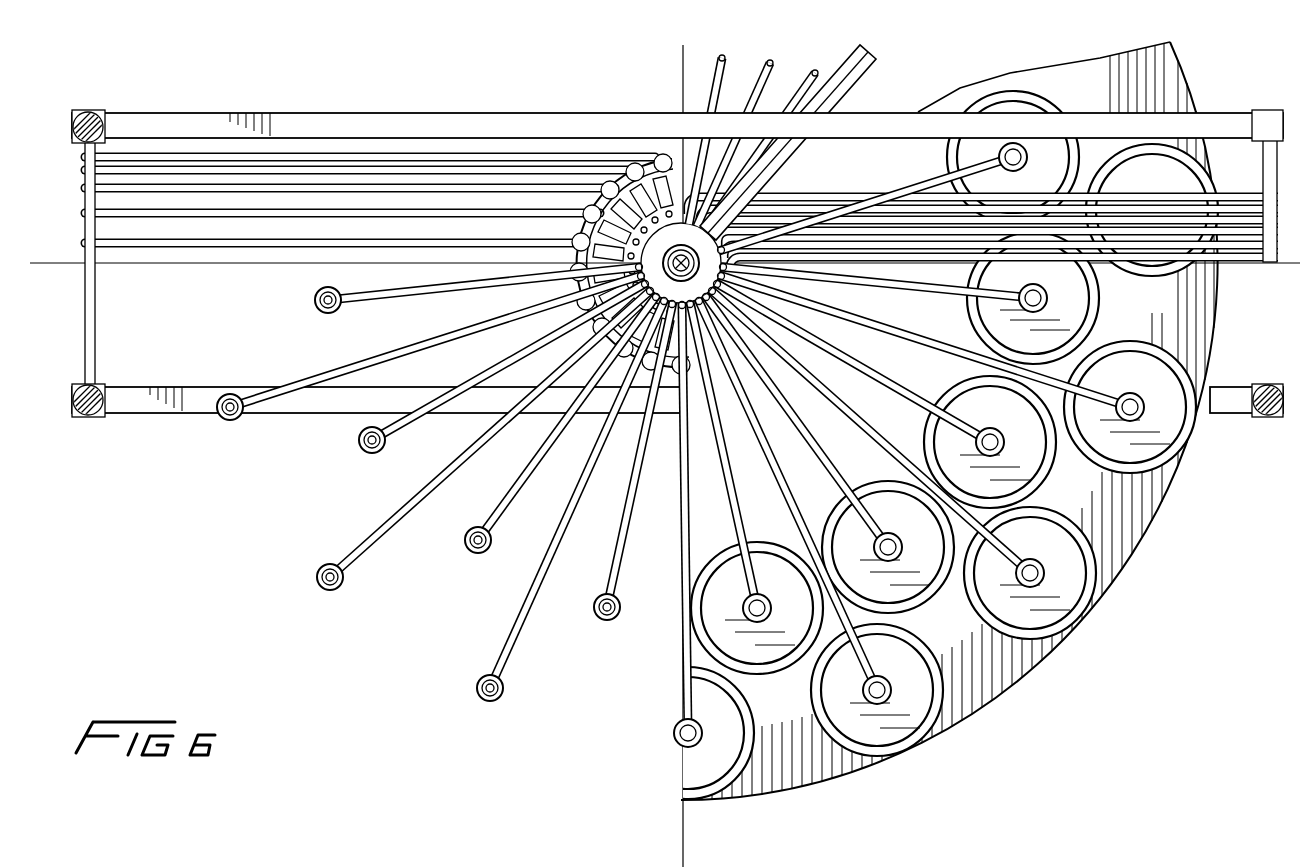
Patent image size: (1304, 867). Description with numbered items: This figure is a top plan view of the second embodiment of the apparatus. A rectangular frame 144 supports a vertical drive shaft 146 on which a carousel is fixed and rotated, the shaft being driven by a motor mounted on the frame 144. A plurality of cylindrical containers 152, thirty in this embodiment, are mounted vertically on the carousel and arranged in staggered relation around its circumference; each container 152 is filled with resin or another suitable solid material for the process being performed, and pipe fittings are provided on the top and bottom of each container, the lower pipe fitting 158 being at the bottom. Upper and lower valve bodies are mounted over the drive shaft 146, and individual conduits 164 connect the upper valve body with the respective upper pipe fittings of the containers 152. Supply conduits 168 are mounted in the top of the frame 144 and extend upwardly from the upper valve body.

The rectangular frame 144 is at (1226, 128).
The vertical drive shaft 146 is at (666, 158).
The cylindrical container 152 is at (1124, 362).
The lower pipe fitting 158 is at (487, 678).
The individual conduit 164 is at (948, 290).
The supply conduit 168 is at (874, 208).